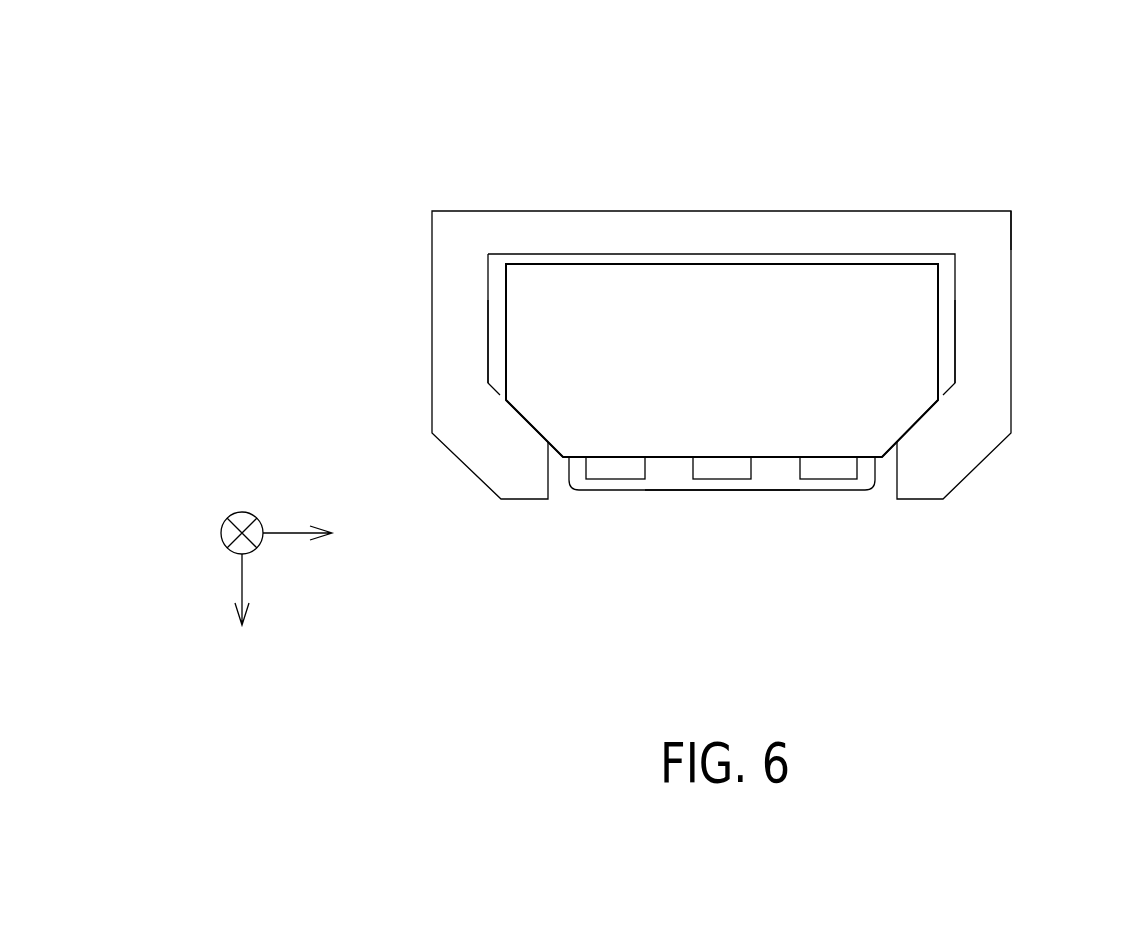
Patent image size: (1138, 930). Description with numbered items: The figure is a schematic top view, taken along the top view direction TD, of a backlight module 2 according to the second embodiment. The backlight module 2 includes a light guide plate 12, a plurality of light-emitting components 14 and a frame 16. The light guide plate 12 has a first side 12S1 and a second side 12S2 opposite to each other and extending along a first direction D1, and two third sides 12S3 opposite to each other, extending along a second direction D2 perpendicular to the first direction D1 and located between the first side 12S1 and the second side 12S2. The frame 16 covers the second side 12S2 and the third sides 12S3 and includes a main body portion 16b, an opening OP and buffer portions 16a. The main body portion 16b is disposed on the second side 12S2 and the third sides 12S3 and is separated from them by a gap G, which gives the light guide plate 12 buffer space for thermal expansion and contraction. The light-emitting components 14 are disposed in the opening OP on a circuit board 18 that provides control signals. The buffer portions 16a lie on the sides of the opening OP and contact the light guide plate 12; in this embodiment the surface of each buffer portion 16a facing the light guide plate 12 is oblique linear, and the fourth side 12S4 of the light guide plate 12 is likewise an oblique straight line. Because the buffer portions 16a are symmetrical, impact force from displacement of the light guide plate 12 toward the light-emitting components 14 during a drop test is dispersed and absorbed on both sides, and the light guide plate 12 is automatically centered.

The backlight module 2 is at (1025, 135).
The light guide plate 12 is at (732, 376).
The first side 12S1 is at (778, 457).
The second side 12S2 is at (725, 265).
The third sides 12S3 is at (506, 328).
The fourth side 12S4 is at (533, 428).
The light-emitting components 14 is at (843, 475).
The frame 16 is at (724, 335).
The buffer portion 16a is at (478, 457).
The main body portion 16b is at (832, 233).
The circuit board 18 is at (662, 470).
The gap G is at (500, 273).
The opening OP is at (710, 503).
The top view direction TD is at (242, 511).
The first direction D1 is at (297, 550).
The second direction D2 is at (262, 594).